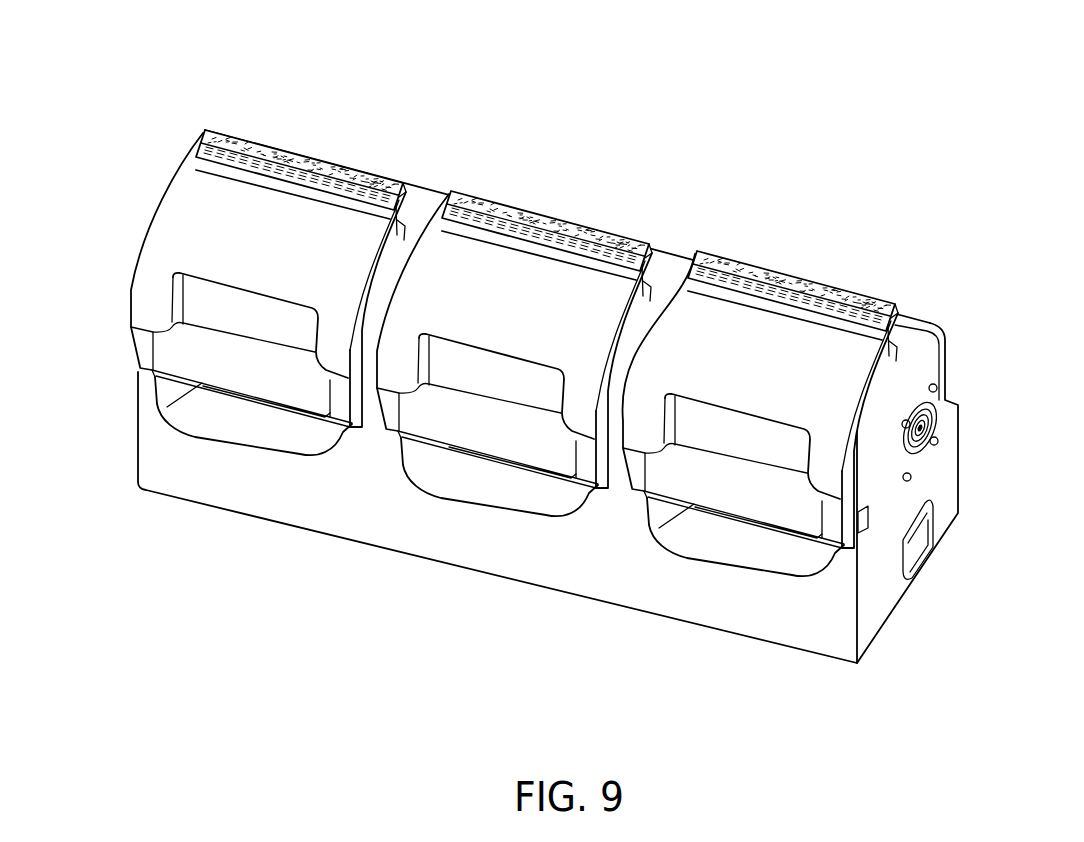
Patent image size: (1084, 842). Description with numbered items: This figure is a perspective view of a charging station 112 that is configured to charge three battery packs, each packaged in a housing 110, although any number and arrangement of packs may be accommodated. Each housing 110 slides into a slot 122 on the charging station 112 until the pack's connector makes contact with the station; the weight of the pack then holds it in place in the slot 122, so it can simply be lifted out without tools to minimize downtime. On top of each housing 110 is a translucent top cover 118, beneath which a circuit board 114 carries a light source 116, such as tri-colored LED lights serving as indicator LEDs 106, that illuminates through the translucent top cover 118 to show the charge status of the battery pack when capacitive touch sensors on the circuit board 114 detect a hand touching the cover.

The housing 110 is at (225, 255).
The indicator LEDs 106 is at (300, 113).
The light source 116 is at (213, 138).
The circuit board 114 is at (286, 153).
The translucent top cover 118 is at (180, 190).
The slot 122 is at (222, 418).
The charging station 112 is at (255, 564).